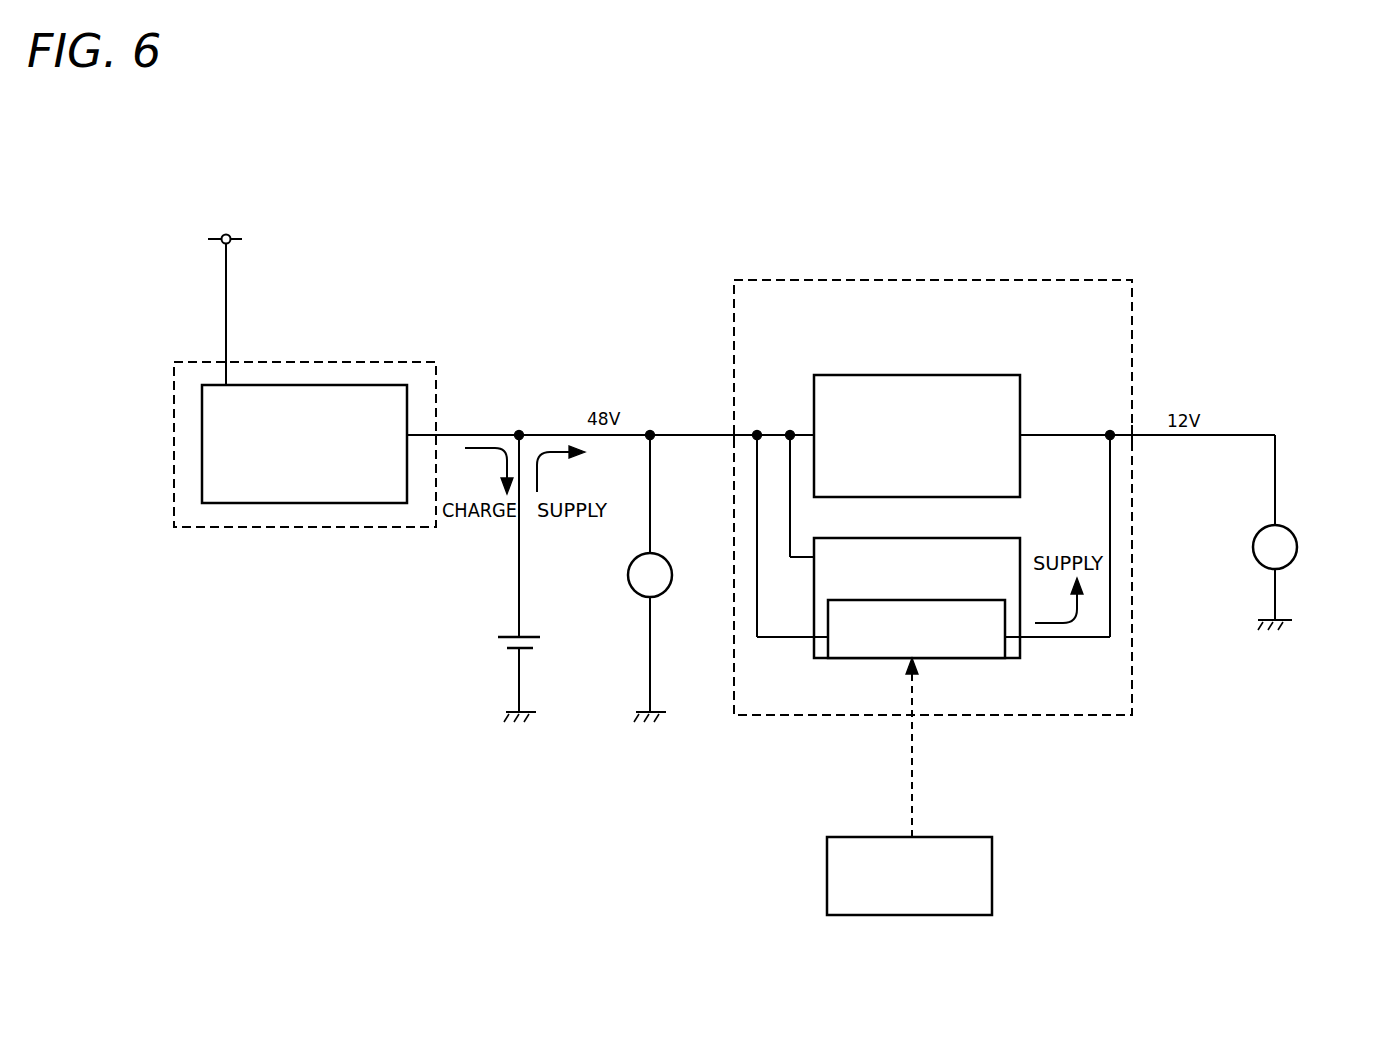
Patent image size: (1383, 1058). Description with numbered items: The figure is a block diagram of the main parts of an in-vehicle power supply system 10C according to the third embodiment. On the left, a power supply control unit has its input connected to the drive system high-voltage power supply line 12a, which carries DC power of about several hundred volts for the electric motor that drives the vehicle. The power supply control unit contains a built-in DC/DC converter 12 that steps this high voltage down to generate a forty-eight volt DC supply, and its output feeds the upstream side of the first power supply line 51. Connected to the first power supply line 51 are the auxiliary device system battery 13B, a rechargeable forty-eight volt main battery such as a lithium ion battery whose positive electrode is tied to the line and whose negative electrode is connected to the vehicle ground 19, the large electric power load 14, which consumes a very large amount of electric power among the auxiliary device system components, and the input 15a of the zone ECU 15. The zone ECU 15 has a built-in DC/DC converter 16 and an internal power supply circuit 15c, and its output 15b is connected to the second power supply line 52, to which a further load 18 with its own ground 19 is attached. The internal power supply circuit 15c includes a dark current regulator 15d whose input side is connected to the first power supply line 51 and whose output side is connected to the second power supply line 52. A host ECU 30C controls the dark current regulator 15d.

The in-vehicle power supply system 10C is at (741, 205).
The DC/DC converter 12 is at (240, 503).
The drive system high-voltage power supply line 12a is at (236, 238).
The auxiliary device system battery 13B is at (540, 636).
The large electric power load 14 is at (671, 580).
The zone ECU 15 is at (877, 280).
The input 15a is at (734, 433).
The output 15b is at (1133, 435).
The internal power supply circuit 15c is at (967, 536).
The dark current regulator 15d is at (1007, 647).
The DC/DC converter 16 is at (1008, 374).
The 12V load 18 is at (1297, 535).
The ground 19 is at (643, 685).
The host ECU 30C is at (827, 867).
The first power supply line 51 is at (693, 433).
The second power supply line 52 is at (1228, 434).